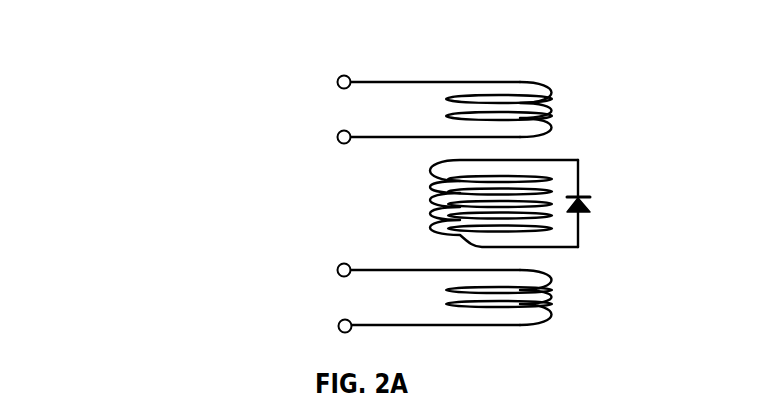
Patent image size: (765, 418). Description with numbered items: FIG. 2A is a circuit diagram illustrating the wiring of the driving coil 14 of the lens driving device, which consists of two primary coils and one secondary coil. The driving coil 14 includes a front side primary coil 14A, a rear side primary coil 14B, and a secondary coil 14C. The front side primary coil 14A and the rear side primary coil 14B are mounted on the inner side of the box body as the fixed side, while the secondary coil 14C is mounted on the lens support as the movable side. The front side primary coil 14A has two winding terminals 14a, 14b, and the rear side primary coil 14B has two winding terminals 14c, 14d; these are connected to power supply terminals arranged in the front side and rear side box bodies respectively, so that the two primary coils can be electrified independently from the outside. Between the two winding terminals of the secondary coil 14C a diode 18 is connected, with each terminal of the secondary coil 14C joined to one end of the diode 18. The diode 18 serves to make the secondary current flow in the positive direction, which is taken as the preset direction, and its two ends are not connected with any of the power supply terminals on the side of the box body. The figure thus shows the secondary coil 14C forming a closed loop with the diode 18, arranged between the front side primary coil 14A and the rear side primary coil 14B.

The driving coil 14 is at (84, 82).
The winding terminal 14a is at (337, 82).
The winding terminal 14b is at (337, 136).
The winding terminal 14c is at (337, 270).
The winding terminal 14d is at (338, 326).
The front side primary coil 14A is at (517, 90).
The rear side primary coil 14B is at (540, 290).
The secondary coil 14C is at (458, 194).
The diode 18 is at (590, 212).